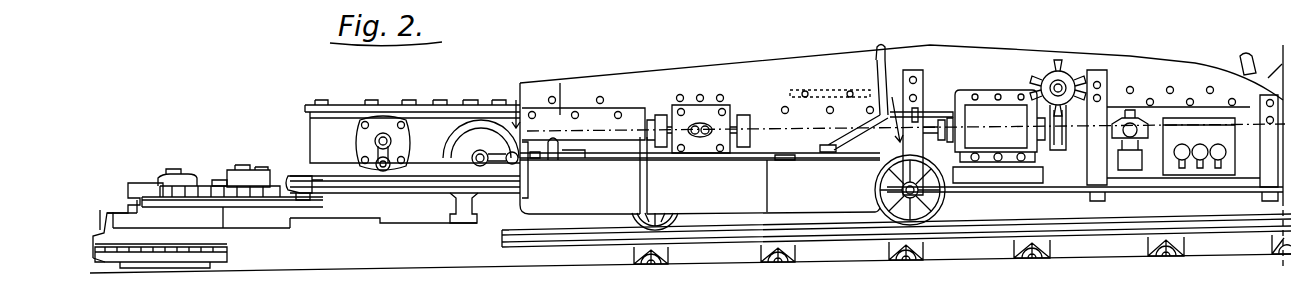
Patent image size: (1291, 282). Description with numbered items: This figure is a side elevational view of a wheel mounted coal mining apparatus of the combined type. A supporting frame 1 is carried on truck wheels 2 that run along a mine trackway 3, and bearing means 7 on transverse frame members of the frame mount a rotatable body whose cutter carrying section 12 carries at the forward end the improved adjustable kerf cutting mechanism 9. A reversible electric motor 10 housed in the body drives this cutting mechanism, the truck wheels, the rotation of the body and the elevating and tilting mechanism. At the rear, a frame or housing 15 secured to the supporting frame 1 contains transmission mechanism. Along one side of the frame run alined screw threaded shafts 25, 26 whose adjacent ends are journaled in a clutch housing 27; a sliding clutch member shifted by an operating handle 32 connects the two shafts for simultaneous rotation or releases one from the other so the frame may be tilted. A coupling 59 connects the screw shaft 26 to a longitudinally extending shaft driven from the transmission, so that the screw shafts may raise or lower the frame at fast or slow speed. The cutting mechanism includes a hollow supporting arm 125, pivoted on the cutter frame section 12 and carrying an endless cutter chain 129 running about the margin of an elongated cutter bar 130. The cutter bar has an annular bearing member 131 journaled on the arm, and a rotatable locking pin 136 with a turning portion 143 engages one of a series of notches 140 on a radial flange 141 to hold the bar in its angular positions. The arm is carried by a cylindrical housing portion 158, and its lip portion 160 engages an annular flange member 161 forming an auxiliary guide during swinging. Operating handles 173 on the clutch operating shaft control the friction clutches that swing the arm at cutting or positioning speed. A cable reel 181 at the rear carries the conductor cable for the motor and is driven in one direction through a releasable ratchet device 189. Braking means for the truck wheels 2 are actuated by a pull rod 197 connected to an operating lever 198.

The supporting frame 1 is at (965, 56).
The truck wheels 2 is at (636, 230).
The mine trackway 3 is at (1002, 228).
The bearing means 7 is at (703, 111).
The adjustable kerf cutting mechanism 9 is at (434, 95).
The motor 10 is at (1279, 128).
The cutter carrying section 12 is at (340, 122).
The transmission housing 15 is at (953, 133).
The screw threaded shaft 25 is at (655, 115).
The screw threaded shaft 26 is at (752, 127).
The clutch housing 27 is at (685, 107).
The operating handle 32 is at (706, 125).
The coupling 59 is at (932, 122).
The supporting arm 125 is at (310, 210).
The cutter chain 129 is at (218, 250).
The cutter bar 130 is at (98, 236).
The annular bearing member 131 is at (135, 190).
The locking pin 136 is at (227, 186).
The notches 140 is at (180, 190).
The radial flange 141 is at (163, 192).
The turning portion 143 is at (245, 172).
The cylindrical housing portion 158 is at (454, 196).
The lip portion 160 is at (310, 182).
The annular flange member 161 is at (308, 197).
The operating handles 173 is at (384, 135).
The cable reel 181 is at (1280, 63).
The releasable ratchet device 189 is at (1060, 133).
The pull rod 197 is at (783, 160).
The operating lever 198 is at (879, 50).